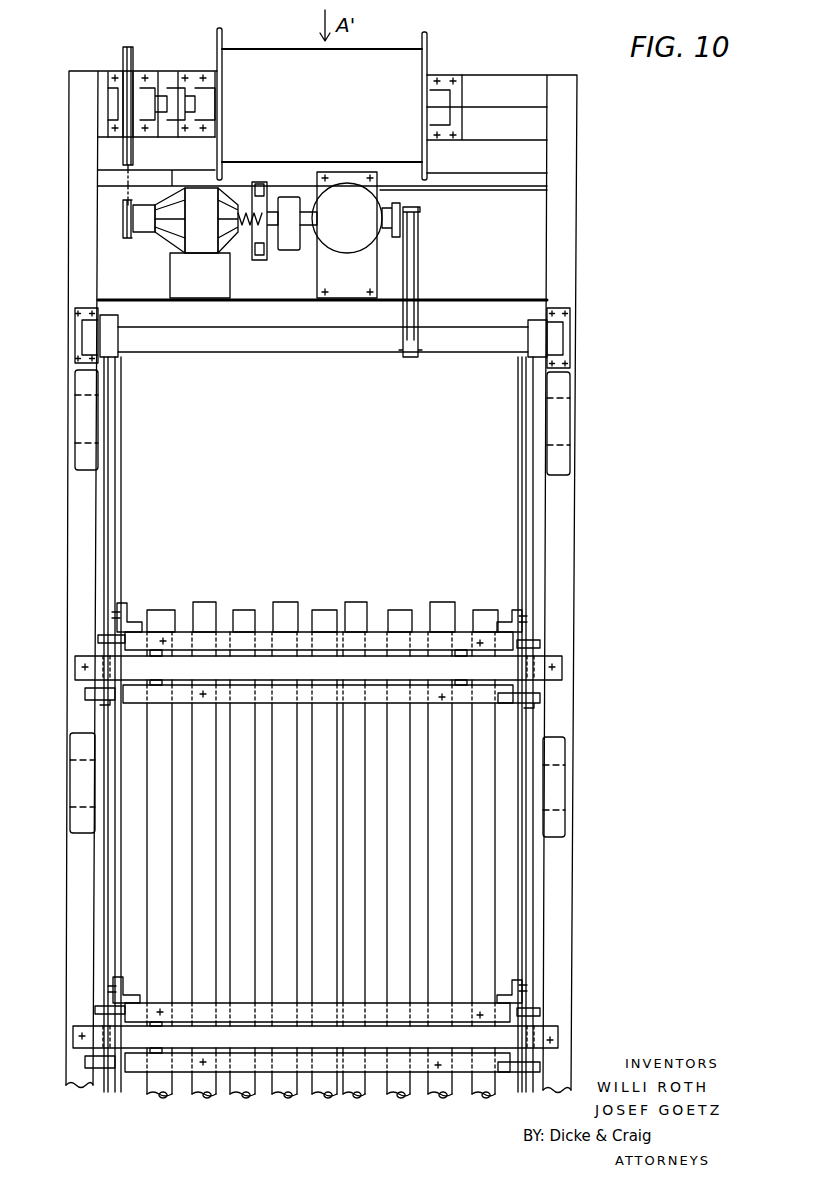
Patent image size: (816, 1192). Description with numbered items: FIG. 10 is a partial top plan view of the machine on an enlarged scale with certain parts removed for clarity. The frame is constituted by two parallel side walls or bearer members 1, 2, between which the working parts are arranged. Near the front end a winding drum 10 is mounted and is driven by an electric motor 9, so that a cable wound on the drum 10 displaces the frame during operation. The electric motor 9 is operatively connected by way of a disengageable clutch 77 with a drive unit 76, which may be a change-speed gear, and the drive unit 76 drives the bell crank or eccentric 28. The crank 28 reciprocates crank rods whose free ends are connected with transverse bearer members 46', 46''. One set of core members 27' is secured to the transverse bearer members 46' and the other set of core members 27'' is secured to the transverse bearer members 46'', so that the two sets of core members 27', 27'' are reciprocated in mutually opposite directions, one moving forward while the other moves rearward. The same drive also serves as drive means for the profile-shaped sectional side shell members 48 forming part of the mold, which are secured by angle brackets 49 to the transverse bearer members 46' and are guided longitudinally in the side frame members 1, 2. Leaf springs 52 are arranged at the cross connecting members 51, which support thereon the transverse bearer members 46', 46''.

The side wall or bearer member 1 is at (68, 522).
The side wall or bearer member 2 is at (578, 560).
The electric motor 9 is at (207, 232).
The winding drum 10 is at (386, 56).
The bell crank 28 is at (418, 258).
The core member 27' is at (332, 598).
The core member 27'' is at (333, 598).
The transverse bearer member 46' is at (377, 793).
The transverse bearer member 46'' is at (379, 910).
The side shell member 48 is at (112, 900).
The angle bracket 49 is at (125, 615).
The cross connecting member 51 is at (563, 668).
The leaf spring 52 is at (160, 682).
The drive unit 76 is at (360, 230).
The clutch 77 is at (300, 240).